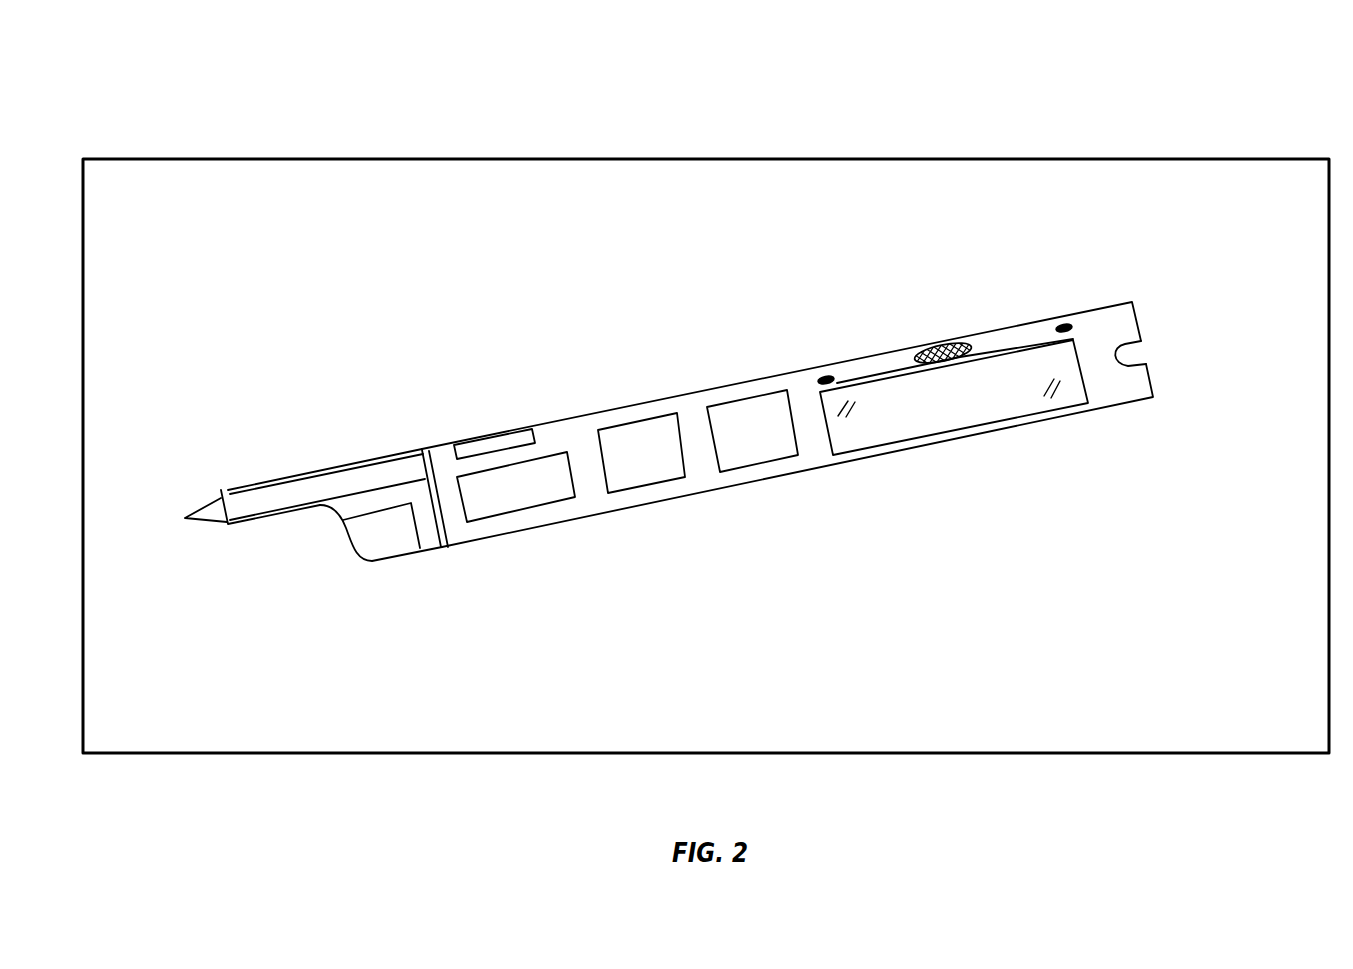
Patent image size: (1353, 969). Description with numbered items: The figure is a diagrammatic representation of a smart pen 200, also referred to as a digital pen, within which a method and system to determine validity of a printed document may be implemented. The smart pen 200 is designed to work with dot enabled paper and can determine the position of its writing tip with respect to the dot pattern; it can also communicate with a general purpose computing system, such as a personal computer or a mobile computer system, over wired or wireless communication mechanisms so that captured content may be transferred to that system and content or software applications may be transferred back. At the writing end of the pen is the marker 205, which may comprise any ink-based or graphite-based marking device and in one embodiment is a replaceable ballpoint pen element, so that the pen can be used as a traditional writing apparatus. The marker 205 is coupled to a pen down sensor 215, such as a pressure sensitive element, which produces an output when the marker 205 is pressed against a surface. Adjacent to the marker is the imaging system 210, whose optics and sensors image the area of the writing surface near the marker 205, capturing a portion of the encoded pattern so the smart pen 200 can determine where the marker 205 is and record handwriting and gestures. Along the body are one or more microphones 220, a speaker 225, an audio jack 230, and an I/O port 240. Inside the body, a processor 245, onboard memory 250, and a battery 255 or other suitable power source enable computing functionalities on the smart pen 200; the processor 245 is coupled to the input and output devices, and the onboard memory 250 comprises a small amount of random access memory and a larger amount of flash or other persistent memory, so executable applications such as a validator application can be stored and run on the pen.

The smart pen 200 is at (1052, 100).
The marker 205 is at (182, 517).
The imaging system 210 is at (367, 545).
The pen down sensor 215 is at (440, 548).
The microphones 220 is at (961, 305).
The speaker 225 is at (948, 304).
The audio jack 230 is at (1133, 351).
The I/O port 240 is at (505, 432).
The processor 245 is at (735, 445).
The onboard memory 250 is at (627, 468).
The battery 255 is at (497, 501).